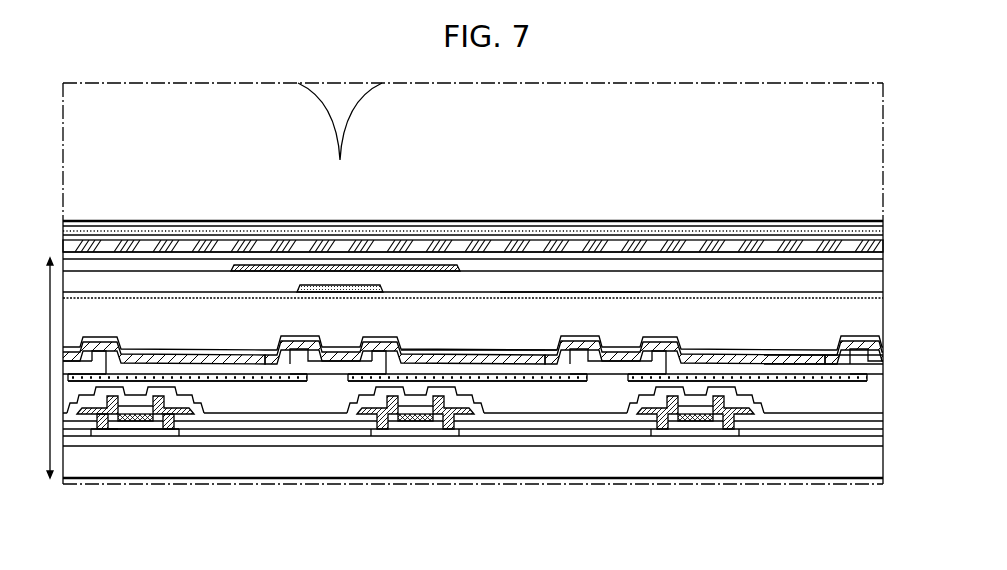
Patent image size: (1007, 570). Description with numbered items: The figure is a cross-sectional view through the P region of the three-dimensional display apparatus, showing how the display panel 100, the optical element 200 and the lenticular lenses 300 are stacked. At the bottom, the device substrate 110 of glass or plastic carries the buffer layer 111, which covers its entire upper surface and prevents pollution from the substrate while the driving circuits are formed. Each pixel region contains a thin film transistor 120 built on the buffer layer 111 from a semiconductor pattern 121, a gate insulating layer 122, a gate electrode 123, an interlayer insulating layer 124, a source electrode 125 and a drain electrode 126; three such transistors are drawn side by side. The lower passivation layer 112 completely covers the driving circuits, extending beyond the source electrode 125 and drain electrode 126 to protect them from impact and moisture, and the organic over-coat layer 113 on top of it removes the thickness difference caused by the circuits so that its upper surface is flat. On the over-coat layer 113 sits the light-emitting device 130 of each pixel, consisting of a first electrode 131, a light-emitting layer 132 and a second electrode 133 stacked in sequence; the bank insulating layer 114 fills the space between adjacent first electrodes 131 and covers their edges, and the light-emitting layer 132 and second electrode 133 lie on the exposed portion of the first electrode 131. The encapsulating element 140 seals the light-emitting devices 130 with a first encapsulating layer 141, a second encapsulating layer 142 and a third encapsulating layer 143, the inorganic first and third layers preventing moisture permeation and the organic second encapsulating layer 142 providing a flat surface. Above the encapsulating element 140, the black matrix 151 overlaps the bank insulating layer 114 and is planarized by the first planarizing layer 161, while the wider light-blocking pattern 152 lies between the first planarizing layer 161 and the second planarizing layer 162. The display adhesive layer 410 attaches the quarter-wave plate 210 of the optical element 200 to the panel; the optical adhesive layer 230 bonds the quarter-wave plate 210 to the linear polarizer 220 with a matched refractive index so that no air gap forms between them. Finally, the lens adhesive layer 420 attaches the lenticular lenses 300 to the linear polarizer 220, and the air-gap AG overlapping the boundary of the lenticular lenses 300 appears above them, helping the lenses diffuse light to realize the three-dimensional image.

The P region P is at (883, 89).
The air-gap AG is at (335, 103).
The display panel 100 is at (39, 368).
The device substrate 110 is at (884, 460).
The buffer layer 111 is at (884, 444).
The lower passivation layer 112 is at (884, 420).
The over-coat layer 113 is at (884, 400).
The bank insulating layer 114 is at (884, 369).
The thin film transistor 120 is at (415, 472).
The semiconductor pattern 121 is at (155, 430).
The gate insulating layer 122 is at (121, 430).
The gate electrode 123 is at (137, 422).
The interlayer insulating layer 124 is at (197, 423).
The source electrode 125 is at (172, 430).
The drain electrode 126 is at (101, 430).
The light-emitting device 130 is at (475, 451).
The first electrode 131 is at (782, 382).
The light-emitting layer 132 is at (810, 370).
The second electrode 133 is at (843, 359).
The encapsulating element 140 is at (520, 420).
The first encapsulating layer 141 is at (525, 353).
The second encapsulating layer 142 is at (558, 323).
The third encapsulating layer 143 is at (588, 294).
The black matrix 151 is at (342, 293).
The light-blocking pattern 152 is at (262, 272).
The first planarizing layer 161 is at (884, 295).
The second planarizing layer 162 is at (884, 271).
The optical element 200 is at (490, 237).
The quarter-wave plate 210 is at (884, 252).
The linear polarizer 220 is at (884, 224).
The optical adhesive layer 230 is at (884, 235).
The lenticular lenses 300 is at (64, 147).
The display adhesive layer 410 is at (64, 250).
The lens adhesive layer 420 is at (64, 225).